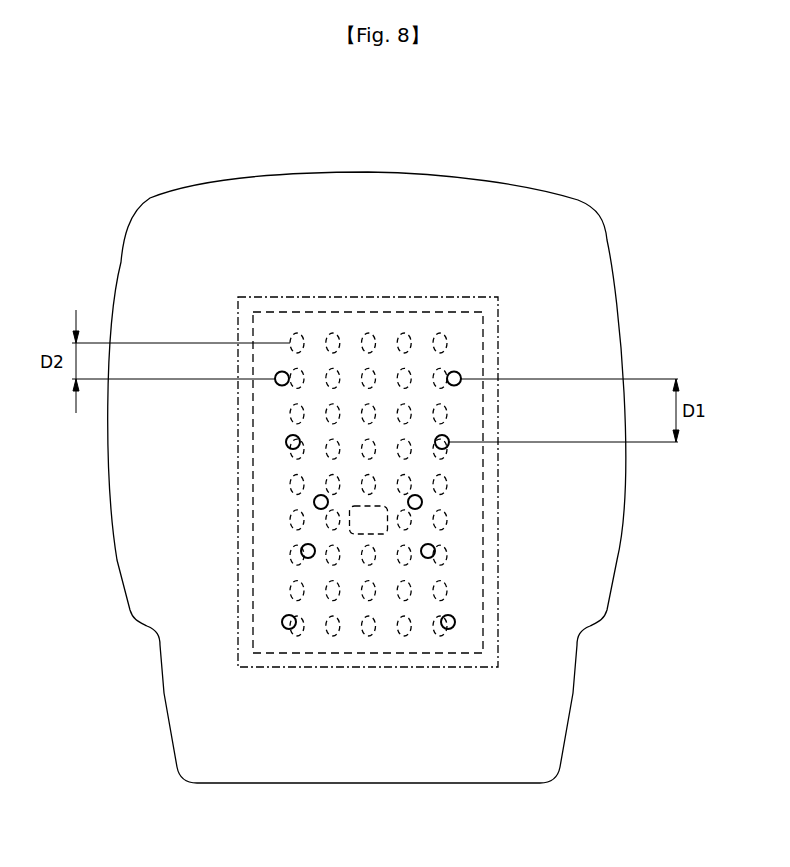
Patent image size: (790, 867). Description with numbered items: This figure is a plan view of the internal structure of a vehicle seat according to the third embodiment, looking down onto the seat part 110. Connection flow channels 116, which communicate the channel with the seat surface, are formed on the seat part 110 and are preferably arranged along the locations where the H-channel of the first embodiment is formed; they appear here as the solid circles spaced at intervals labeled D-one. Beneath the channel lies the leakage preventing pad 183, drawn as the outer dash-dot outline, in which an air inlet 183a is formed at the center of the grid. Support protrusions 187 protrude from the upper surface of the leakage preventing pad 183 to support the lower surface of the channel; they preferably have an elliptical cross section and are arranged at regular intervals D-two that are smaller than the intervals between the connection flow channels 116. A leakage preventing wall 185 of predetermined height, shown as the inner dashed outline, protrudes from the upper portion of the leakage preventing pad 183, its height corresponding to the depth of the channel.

The seat part 110 is at (523, 208).
The connection flow channels 116 is at (282, 620).
The leakage preventing pad 183 is at (443, 303).
The air inlet 183a is at (380, 520).
The leakage preventing wall 185 is at (385, 318).
The support protrusions 187 is at (333, 333).